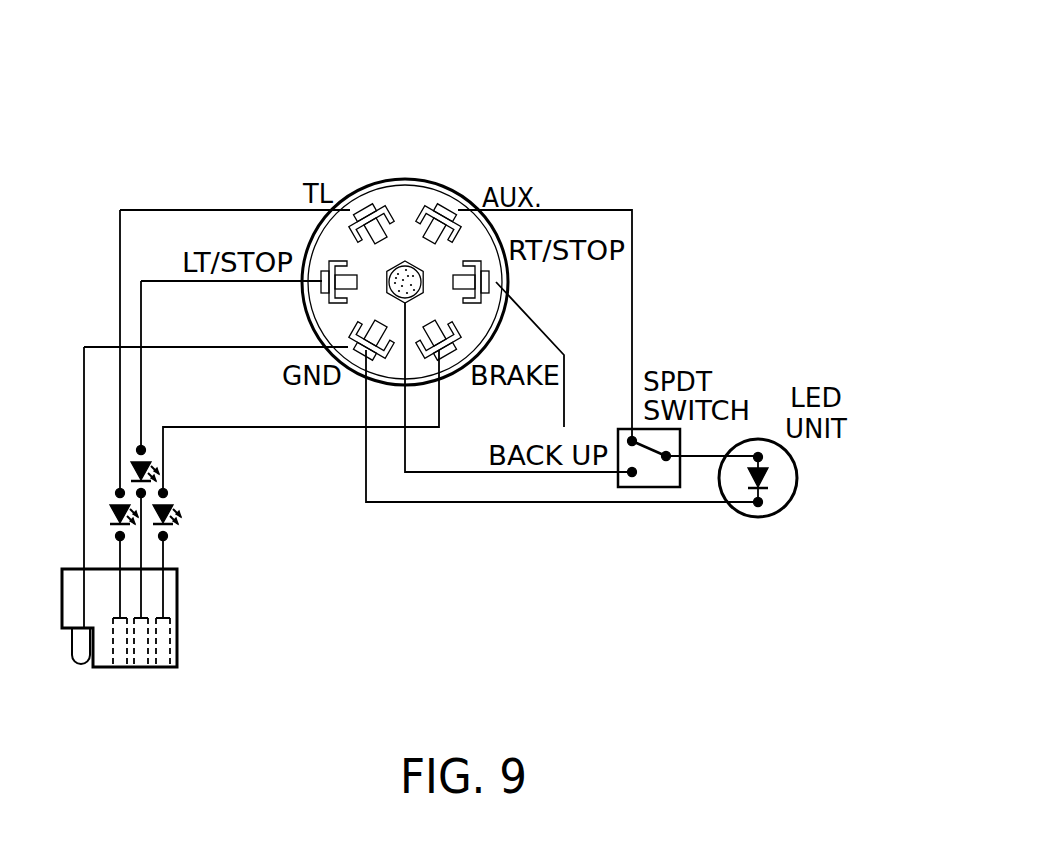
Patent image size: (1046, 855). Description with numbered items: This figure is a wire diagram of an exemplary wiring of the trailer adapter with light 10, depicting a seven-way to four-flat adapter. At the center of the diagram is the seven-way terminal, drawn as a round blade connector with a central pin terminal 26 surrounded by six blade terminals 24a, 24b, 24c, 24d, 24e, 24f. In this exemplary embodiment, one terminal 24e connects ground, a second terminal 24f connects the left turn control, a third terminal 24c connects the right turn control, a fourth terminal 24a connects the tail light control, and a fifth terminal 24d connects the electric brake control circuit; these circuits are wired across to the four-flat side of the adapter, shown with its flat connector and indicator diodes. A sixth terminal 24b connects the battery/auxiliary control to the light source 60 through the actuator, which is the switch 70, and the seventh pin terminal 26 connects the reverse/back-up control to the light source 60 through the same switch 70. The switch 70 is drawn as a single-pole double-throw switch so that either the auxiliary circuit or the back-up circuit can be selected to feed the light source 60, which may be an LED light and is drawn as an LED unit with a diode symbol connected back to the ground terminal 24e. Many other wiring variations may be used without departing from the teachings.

The trailer adapter with light 10 is at (686, 218).
The pin terminal 26 is at (404, 260).
The terminal 24a is at (440, 192).
The terminal 24b is at (366, 210).
The terminal 24c is at (316, 248).
The terminal 24d is at (348, 332).
The terminal 24e is at (440, 387).
The terminal 24f is at (488, 284).
The switch 70 is at (659, 473).
The light source 60 is at (775, 480).